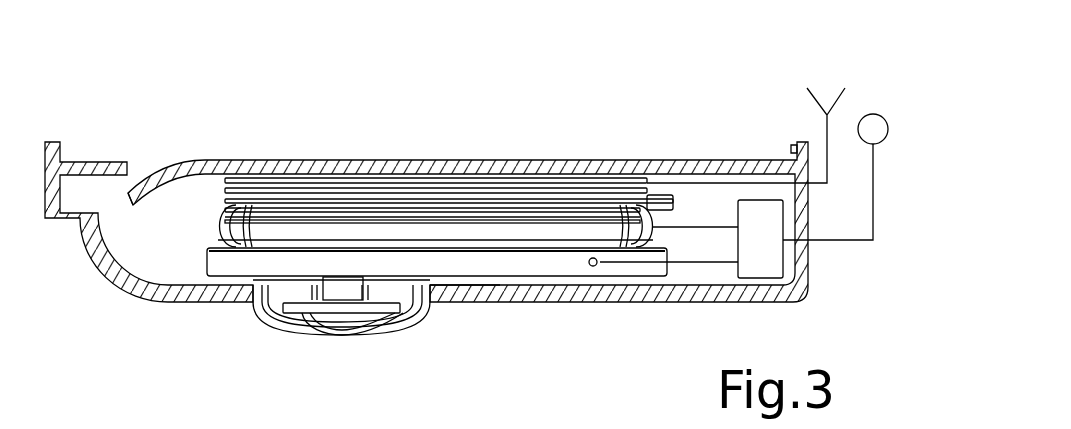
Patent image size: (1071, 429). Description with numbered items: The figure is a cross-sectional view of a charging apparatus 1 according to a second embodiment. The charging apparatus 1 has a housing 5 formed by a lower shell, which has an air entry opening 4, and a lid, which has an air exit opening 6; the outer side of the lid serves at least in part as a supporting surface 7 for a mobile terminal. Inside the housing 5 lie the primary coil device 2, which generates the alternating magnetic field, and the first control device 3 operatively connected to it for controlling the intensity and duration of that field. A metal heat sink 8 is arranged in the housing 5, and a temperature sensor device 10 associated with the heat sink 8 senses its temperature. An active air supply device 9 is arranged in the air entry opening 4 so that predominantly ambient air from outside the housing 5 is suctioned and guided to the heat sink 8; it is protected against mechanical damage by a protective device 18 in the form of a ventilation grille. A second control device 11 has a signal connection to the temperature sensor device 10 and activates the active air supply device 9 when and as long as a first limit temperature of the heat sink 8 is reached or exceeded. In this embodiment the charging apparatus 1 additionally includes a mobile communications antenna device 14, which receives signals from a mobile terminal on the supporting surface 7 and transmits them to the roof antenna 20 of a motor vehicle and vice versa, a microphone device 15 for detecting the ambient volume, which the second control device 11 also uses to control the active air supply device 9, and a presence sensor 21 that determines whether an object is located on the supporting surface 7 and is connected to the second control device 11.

The charging apparatus 1 is at (658, 132).
The primary coil device 2 is at (273, 197).
The first control device 3 is at (233, 228).
The air entry opening 4 is at (272, 313).
The housing 5 is at (493, 302).
The air exit opening 6 is at (133, 180).
The supporting surface 7 is at (95, 160).
The heat sink 8 is at (538, 262).
The active air supply device 9 is at (347, 310).
The temperature sensor device 10 is at (593, 268).
The second control device 11 is at (750, 207).
The mobile communications antenna device 14 is at (350, 180).
The microphone device 15 is at (873, 114).
The protective device 18 is at (420, 317).
The roof antenna 20 is at (828, 86).
The presence sensor 21 is at (792, 143).